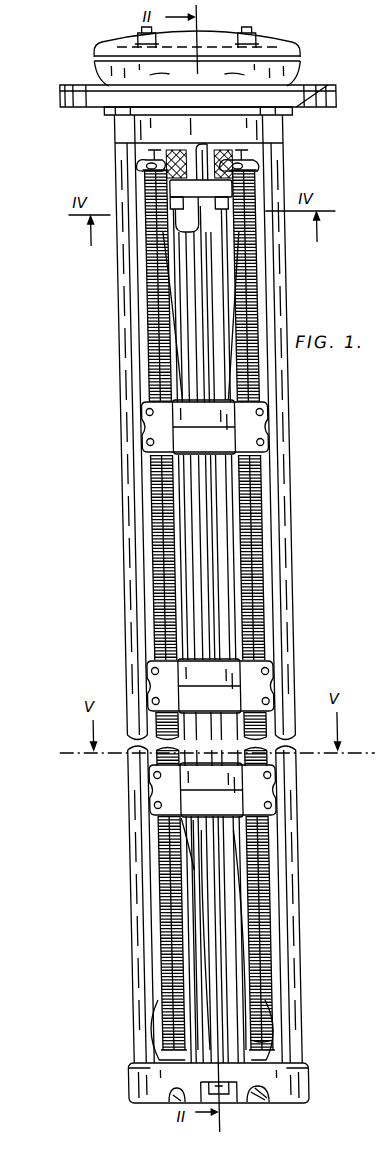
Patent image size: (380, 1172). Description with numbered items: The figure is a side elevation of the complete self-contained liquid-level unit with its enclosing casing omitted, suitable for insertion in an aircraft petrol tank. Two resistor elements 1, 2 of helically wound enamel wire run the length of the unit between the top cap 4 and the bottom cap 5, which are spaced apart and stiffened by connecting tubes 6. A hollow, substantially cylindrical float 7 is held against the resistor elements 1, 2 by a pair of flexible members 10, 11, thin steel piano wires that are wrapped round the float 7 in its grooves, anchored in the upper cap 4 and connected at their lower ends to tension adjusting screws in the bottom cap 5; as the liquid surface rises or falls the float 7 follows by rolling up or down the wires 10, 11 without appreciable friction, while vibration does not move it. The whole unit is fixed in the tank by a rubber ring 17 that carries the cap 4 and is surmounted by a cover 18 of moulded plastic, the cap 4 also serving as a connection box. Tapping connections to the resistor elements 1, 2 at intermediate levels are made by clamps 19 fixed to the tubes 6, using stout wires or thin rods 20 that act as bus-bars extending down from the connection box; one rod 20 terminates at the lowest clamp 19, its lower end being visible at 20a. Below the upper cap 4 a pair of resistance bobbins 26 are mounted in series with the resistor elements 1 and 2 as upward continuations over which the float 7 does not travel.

The resistor element 1 is at (159, 545).
The resistor element 2 is at (251, 548).
The top cap 4 is at (154, 123).
The bottom cap 5 is at (132, 1082).
The connecting tubes 6 is at (130, 483).
The float 7 is at (140, 1042).
The flexible member 10 is at (188, 960).
The flexible member 11 is at (231, 982).
The rubber ring 17 is at (339, 91).
The cover 18 is at (272, 45).
The clamp 19 is at (173, 432).
The rod 20 is at (181, 258).
The lower end of rod 20a is at (180, 838).
The resistance bobbin 26 is at (153, 182).